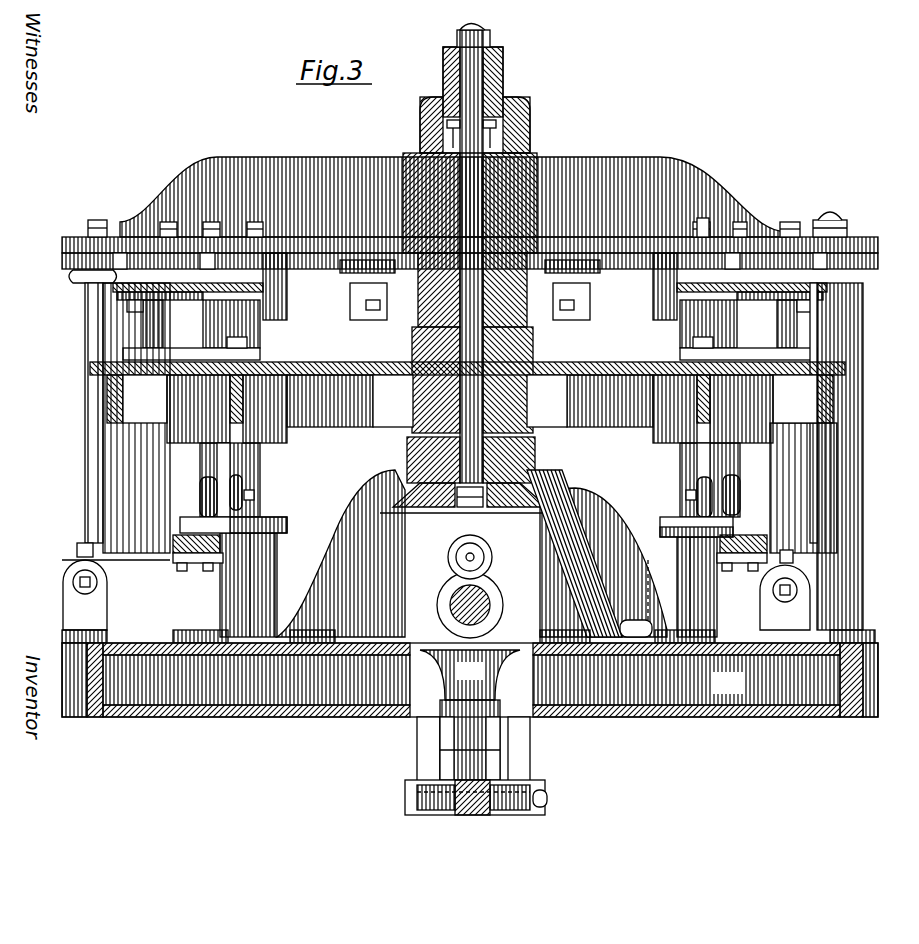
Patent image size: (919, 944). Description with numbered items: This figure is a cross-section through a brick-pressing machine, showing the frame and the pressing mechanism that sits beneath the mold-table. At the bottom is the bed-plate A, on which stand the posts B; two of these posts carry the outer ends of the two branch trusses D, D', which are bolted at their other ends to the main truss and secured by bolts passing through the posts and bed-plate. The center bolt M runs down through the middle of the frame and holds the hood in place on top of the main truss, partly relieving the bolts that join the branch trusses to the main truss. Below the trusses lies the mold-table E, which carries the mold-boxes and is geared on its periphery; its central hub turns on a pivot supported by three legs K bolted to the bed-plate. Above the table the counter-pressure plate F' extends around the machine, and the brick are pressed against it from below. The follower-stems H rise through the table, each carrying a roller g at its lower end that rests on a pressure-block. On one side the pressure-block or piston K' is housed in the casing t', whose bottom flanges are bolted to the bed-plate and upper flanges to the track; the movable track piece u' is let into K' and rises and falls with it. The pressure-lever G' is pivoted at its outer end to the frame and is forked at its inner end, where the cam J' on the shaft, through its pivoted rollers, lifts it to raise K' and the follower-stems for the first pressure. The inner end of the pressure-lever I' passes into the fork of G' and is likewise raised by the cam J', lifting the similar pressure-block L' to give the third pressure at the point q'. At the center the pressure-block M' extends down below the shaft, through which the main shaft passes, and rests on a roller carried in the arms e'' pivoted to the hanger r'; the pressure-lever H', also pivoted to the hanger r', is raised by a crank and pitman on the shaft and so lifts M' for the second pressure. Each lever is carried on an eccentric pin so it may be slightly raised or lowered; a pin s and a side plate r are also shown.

The branch truss D is at (470, 220).
The branch truss D' is at (670, 197).
The third pressure point q' is at (723, 222).
The counter-pressure plate F' is at (470, 306).
The mold-table E is at (845, 402).
The center bolt M is at (473, 474).
The follower-stem H is at (485, 480).
The roller g is at (203, 488).
The movable track piece u' is at (436, 522).
The pressure-block K' is at (244, 509).
The pressure-block L' is at (706, 532).
The post B is at (118, 528).
The casing t' is at (206, 550).
The pressure-lever G' is at (428, 553).
The pin s is at (450, 562).
The cam J' is at (465, 605).
The leg K is at (589, 553).
The pressure-lever I' is at (658, 598).
The bed-plate A is at (470, 680).
The pressure-block M' is at (470, 675).
The arm e'' is at (480, 740).
The side plate r is at (414, 753).
The hanger r' is at (532, 753).
The pressure-lever H' is at (476, 811).